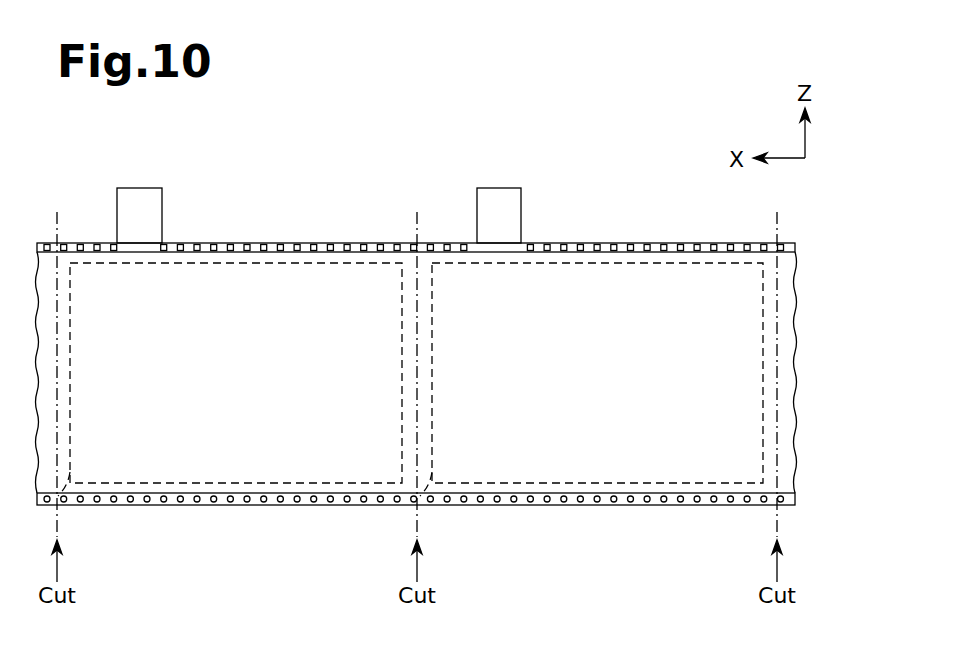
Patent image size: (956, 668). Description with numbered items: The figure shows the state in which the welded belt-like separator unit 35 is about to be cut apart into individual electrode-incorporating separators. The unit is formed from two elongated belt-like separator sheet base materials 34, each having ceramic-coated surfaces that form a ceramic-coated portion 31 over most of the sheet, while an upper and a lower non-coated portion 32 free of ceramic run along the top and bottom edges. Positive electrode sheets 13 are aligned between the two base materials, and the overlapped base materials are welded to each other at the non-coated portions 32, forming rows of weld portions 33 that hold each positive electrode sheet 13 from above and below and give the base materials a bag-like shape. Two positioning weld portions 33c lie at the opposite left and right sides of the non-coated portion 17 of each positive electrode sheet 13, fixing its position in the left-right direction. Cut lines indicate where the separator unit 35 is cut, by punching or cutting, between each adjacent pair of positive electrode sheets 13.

The belt-like separator unit 35 is at (80, 153).
The non-coated portion of the positive electrode sheet 17 is at (160, 196).
The positioning weld portions 33c is at (114, 243).
The weld portions 33 is at (306, 243).
The non-coated portions 32 is at (657, 243).
The ceramic-coated portion 31 is at (790, 308).
The separator sheet base material 34 is at (790, 460).
The positive electrode sheet 13 is at (438, 524).